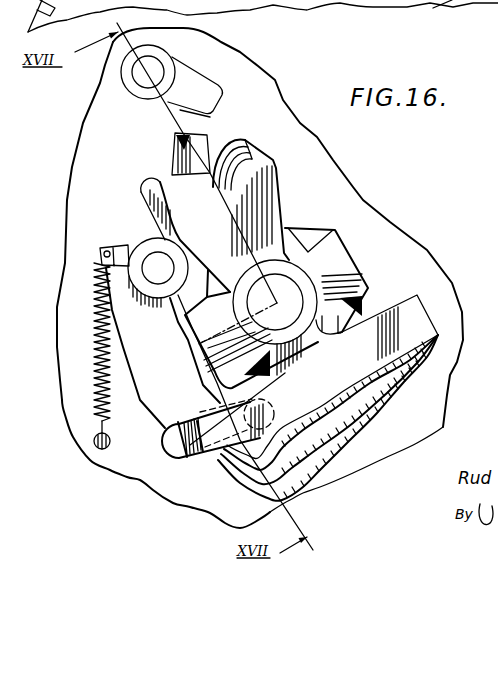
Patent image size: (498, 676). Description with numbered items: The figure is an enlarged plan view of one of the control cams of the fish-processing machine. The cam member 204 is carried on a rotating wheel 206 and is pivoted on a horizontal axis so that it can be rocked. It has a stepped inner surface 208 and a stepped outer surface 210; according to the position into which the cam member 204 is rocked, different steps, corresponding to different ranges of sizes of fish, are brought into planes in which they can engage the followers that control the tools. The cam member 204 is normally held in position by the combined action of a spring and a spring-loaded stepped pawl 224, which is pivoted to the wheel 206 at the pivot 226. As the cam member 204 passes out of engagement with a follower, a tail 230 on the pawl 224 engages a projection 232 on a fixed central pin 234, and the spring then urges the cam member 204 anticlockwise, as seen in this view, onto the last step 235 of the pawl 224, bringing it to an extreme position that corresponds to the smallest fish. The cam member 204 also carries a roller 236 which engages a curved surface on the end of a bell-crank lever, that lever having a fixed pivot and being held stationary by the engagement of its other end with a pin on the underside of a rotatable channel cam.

The cam member 204 is at (403, 310).
The rotating wheel 206 is at (408, 444).
The stepped inner surface 208 is at (236, 140).
The stepped outer surface 210 is at (313, 453).
The spring-loaded stepped pawl 224 is at (190, 445).
The pivot 226 is at (157, 262).
The tail 230 is at (177, 173).
The projection 232 is at (207, 88).
The fixed central pin 234 is at (142, 72).
The last step 235 is at (270, 406).
The roller 236 is at (283, 267).